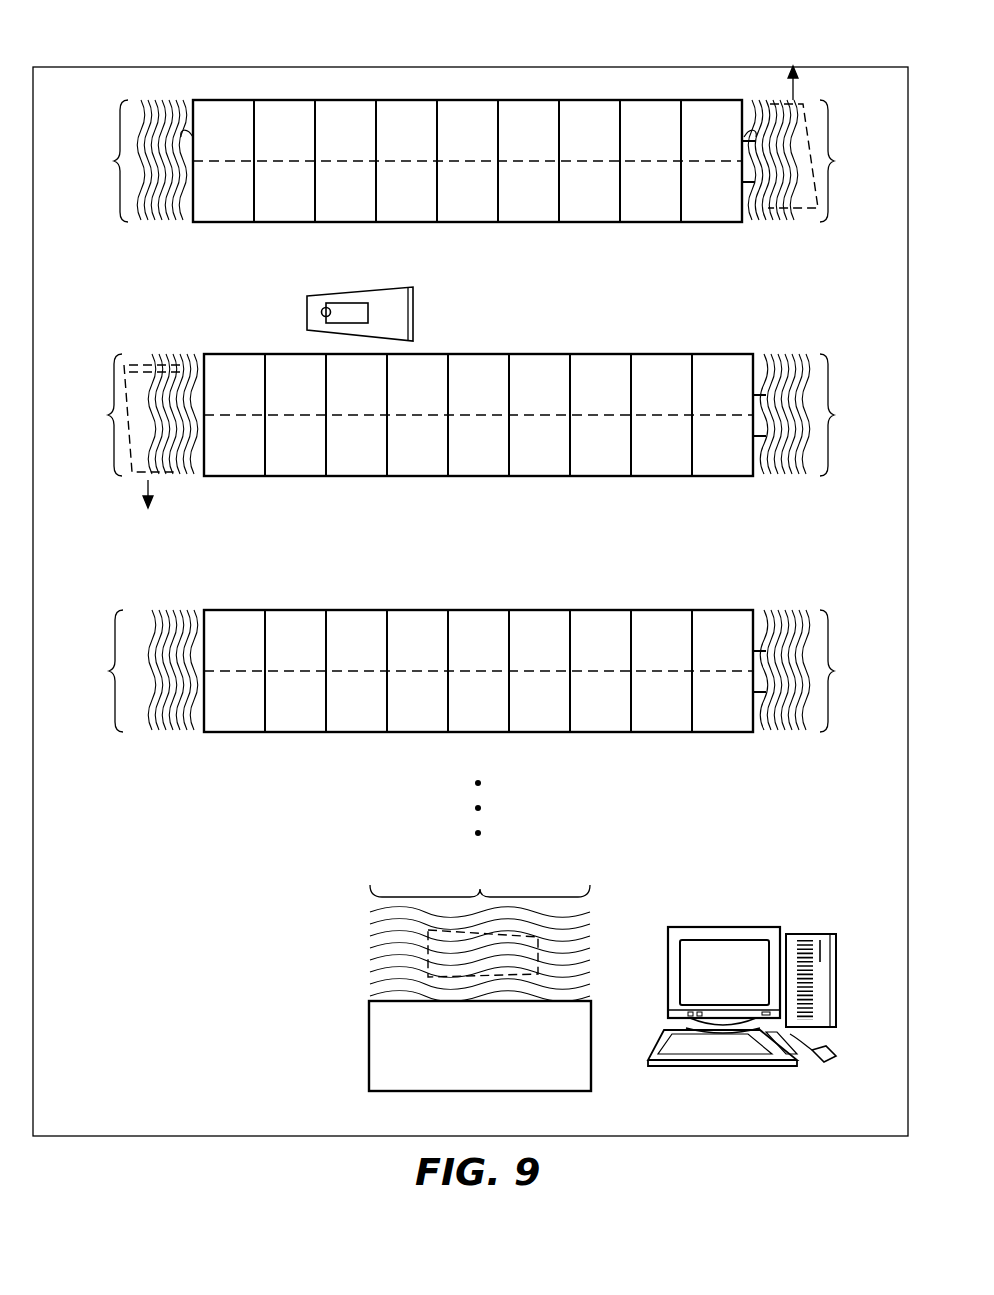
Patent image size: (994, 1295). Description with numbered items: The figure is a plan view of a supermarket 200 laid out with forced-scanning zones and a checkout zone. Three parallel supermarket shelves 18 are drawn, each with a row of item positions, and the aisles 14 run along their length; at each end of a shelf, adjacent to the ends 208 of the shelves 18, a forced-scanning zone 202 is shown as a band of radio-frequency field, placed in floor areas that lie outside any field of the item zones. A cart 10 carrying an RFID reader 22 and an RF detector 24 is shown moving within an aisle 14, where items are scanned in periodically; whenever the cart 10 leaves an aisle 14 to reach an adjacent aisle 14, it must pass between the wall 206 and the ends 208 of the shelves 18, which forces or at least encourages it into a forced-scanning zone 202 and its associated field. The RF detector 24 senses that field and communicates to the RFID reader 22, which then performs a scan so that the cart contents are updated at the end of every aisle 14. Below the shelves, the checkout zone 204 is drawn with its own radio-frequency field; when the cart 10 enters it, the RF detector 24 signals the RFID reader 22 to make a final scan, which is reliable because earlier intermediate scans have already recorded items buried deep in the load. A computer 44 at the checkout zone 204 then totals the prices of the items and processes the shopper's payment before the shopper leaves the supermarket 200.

The supermarket 200 is at (548, 58).
The supermarket shelves 18 is at (648, 100).
The aisles 14 is at (736, 240).
The forced-scanning zones 202 is at (143, 118).
The ends of the shelves 208 is at (193, 138).
The cart 10 is at (804, 102).
The RFID reader 22 is at (350, 307).
The RF detector 24 is at (322, 308).
The wall 206 is at (33, 815).
The checkout zone 204 is at (330, 1052).
The computer 44 is at (814, 906).